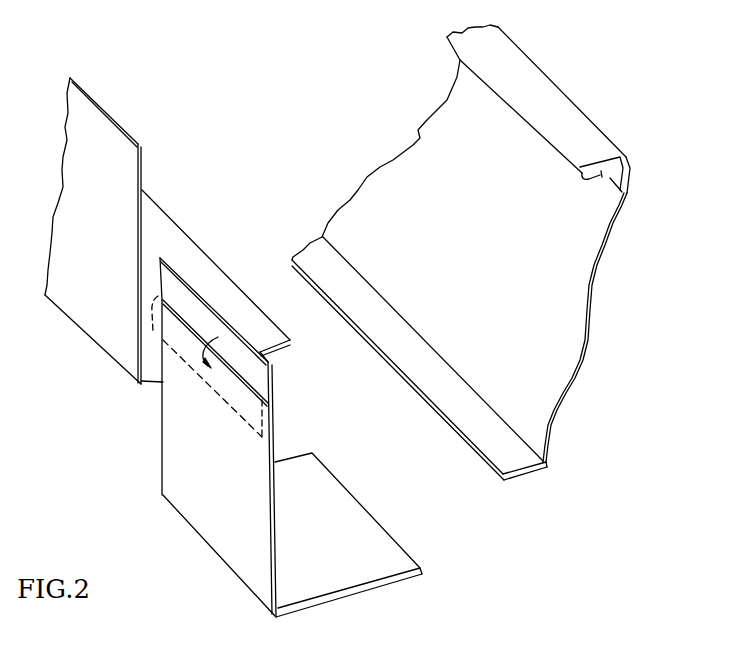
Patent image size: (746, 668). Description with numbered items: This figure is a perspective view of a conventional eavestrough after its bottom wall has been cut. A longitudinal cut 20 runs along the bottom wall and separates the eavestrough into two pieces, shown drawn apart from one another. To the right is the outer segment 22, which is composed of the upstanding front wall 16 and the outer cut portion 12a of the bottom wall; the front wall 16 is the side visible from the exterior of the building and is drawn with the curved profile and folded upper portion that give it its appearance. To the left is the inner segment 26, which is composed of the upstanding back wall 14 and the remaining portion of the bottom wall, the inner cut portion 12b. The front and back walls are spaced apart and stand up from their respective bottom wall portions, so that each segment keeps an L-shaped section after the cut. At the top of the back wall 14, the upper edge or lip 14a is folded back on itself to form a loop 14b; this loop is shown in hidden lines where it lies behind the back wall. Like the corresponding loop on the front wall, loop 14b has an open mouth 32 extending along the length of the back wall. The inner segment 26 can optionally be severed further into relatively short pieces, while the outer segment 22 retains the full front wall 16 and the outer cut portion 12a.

The back wall 14 is at (282, 403).
The upper edge or lip of the back wall 14a is at (185, 277).
The loop 14b is at (235, 400).
The outer cut portion of the bottom wall 12a is at (418, 360).
The inner cut portion of the bottom wall 12b is at (352, 528).
The front wall 16 is at (412, 173).
The longitudinal cut 20 is at (480, 452).
The outer segment 22 is at (604, 342).
The inner segment 26 is at (140, 462).
The open mouth 32 is at (262, 432).